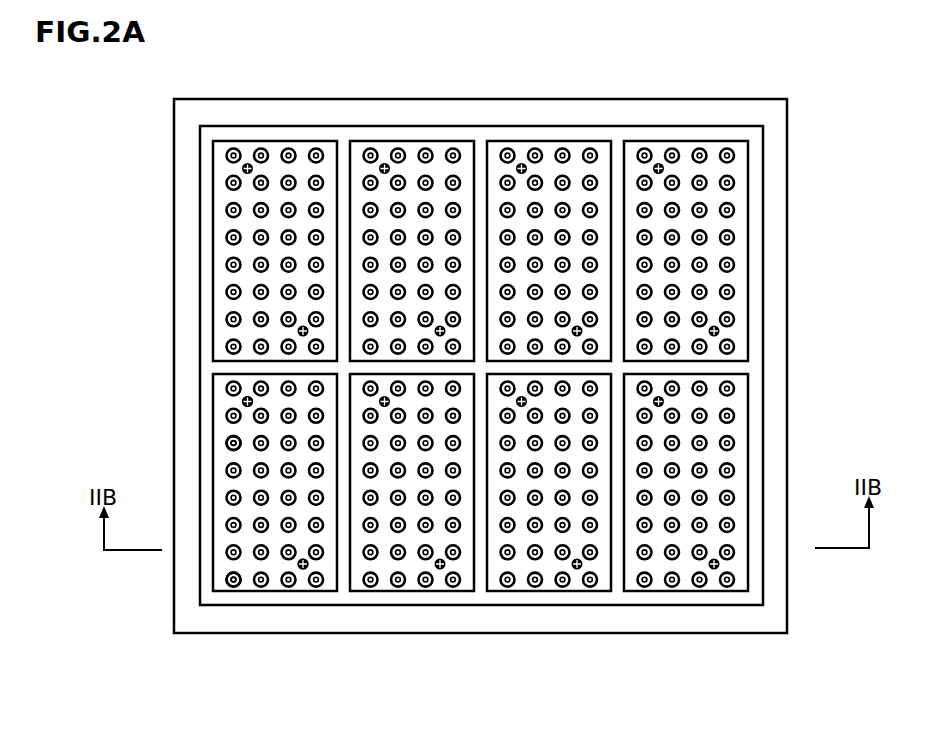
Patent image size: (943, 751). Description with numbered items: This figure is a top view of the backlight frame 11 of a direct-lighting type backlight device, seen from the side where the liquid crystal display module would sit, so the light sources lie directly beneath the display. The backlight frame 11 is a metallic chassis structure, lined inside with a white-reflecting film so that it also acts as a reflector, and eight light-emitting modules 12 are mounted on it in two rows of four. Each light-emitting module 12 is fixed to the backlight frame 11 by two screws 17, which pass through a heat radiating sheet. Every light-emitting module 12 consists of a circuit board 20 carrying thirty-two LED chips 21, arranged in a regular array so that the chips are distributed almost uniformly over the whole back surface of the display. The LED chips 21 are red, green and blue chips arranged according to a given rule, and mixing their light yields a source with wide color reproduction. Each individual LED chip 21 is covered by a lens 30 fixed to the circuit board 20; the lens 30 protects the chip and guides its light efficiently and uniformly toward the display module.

The backlight frame 11 is at (773, 222).
The light-emitting module 12 is at (236, 612).
The screw 17 is at (242, 401).
The circuit board 20 is at (275, 586).
The LED chip 21 is at (226, 442).
The lens 30 is at (228, 576).